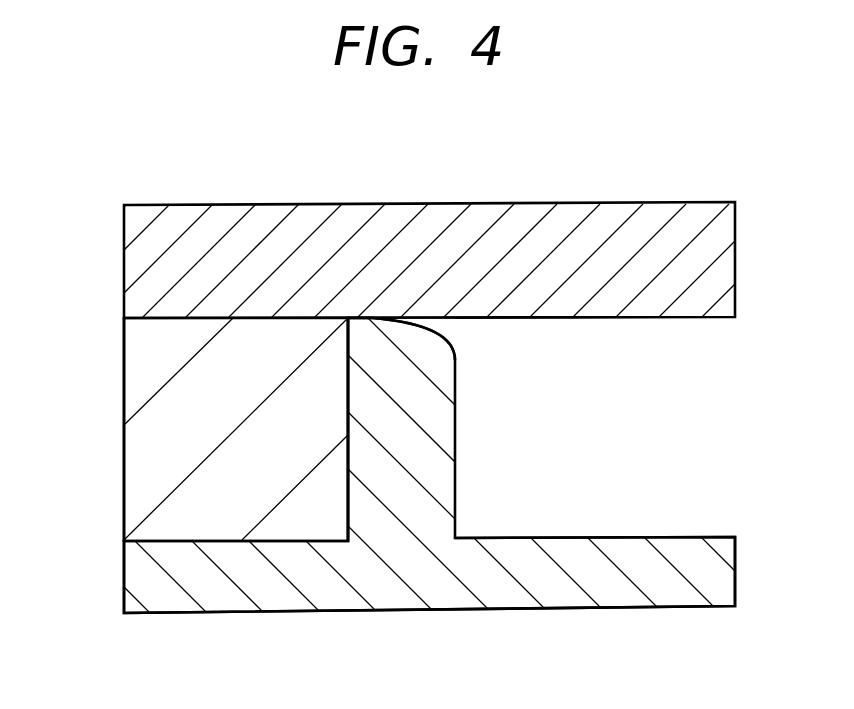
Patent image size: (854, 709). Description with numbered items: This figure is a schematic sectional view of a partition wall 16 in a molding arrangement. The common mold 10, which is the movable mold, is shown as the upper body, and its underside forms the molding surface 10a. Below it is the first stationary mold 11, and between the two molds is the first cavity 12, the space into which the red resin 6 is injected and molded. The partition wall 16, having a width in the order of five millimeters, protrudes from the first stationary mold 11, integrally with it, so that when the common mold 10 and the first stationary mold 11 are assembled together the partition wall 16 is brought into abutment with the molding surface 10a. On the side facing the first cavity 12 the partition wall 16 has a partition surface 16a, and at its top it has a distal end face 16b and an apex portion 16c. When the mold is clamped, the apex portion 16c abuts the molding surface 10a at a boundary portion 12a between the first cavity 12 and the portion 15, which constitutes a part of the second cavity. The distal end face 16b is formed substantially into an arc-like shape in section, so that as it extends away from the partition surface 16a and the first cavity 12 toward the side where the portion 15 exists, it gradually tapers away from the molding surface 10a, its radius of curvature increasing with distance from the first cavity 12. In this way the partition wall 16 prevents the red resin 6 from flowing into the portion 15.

The red resin 6 is at (143, 512).
The common mold 10 is at (636, 210).
The molding surface 10a is at (517, 325).
The first stationary mold 11 is at (655, 548).
The first cavity 12 is at (224, 323).
The boundary portion 12a is at (413, 433).
The portion 15 is at (618, 317).
The partition wall 16 is at (445, 532).
The partition surface 16a is at (348, 403).
The distal end face 16b is at (446, 338).
The apex portion 16c is at (349, 316).